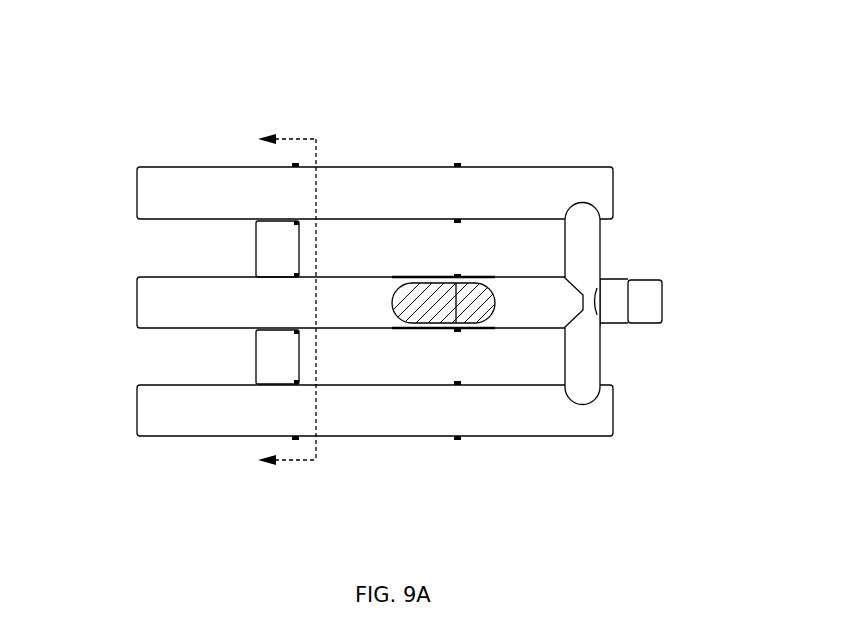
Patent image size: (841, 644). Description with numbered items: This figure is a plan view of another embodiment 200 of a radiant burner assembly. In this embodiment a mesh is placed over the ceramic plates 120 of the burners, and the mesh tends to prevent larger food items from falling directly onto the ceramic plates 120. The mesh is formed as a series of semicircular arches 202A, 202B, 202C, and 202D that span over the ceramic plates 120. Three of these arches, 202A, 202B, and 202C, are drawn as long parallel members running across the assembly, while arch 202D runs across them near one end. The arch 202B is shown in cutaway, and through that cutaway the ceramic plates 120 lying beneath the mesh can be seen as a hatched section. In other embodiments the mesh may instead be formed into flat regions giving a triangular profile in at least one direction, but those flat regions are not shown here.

The radiant burner assembly 200 is at (257, 78).
The semicircular arch 202A is at (178, 196).
The semicircular arch 202B is at (195, 301).
The semicircular arch 202C is at (196, 406).
The semicircular arch 202D is at (583, 257).
The ceramic plates 120 is at (428, 302).